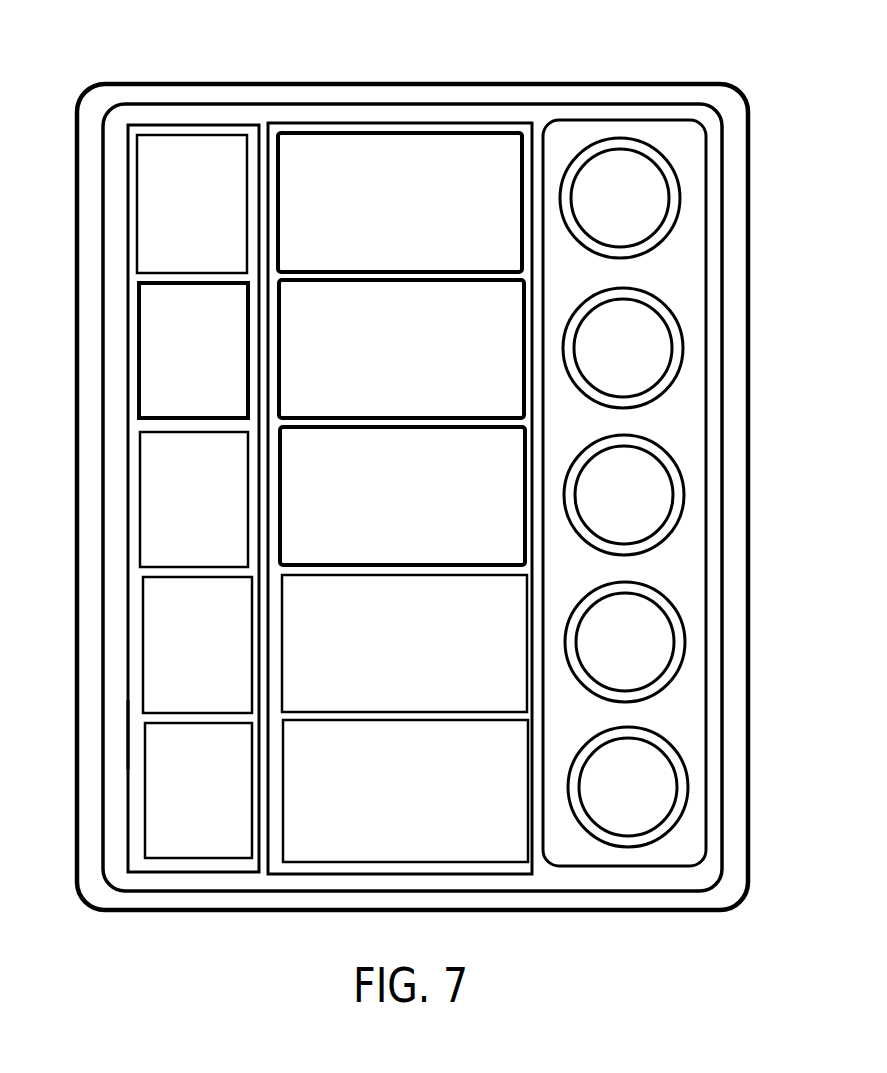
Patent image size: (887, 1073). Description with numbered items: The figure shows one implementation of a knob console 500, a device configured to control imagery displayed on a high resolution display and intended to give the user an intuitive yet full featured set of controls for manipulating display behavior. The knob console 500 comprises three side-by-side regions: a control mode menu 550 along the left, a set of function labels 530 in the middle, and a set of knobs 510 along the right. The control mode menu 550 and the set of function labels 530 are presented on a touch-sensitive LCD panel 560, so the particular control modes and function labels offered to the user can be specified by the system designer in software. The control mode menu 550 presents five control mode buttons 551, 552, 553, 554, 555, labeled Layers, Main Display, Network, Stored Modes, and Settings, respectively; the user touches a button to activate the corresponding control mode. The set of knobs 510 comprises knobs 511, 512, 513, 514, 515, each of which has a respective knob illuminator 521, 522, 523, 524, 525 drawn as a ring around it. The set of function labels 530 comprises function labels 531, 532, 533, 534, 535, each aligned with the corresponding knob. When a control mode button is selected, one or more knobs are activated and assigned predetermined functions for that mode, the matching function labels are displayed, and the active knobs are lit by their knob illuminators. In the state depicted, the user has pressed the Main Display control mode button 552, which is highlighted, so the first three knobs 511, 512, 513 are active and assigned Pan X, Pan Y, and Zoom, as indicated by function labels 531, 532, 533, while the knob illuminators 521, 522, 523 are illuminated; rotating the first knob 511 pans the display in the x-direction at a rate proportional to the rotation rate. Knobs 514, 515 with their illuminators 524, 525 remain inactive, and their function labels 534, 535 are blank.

The knob console 500 is at (426, 78).
The set of knobs 510 is at (612, 111).
The first knob 511 is at (672, 197).
The second knob 512 is at (675, 348).
The third knob 513 is at (676, 497).
The fourth knob 514 is at (677, 645).
The fifth knob 515 is at (680, 790).
The knob illuminator 521 is at (600, 140).
The knob illuminator 522 is at (605, 292).
The knob illuminator 523 is at (637, 438).
The knob illuminator 524 is at (647, 585).
The knob illuminator 525 is at (652, 727).
The set of function labels 530 is at (382, 114).
The function label 531 is at (395, 268).
The function label 532 is at (398, 416).
The function label 533 is at (397, 563).
The function label 534 is at (420, 710).
The function label 535 is at (420, 860).
The control mode menu 550 is at (178, 116).
The control mode button 551 is at (137, 205).
The control mode button 552 is at (139, 353).
The control mode button 553 is at (140, 500).
The control mode button 554 is at (143, 645).
The control mode button 555 is at (145, 808).
The touch-sensitive LCD panel 560 is at (122, 738).